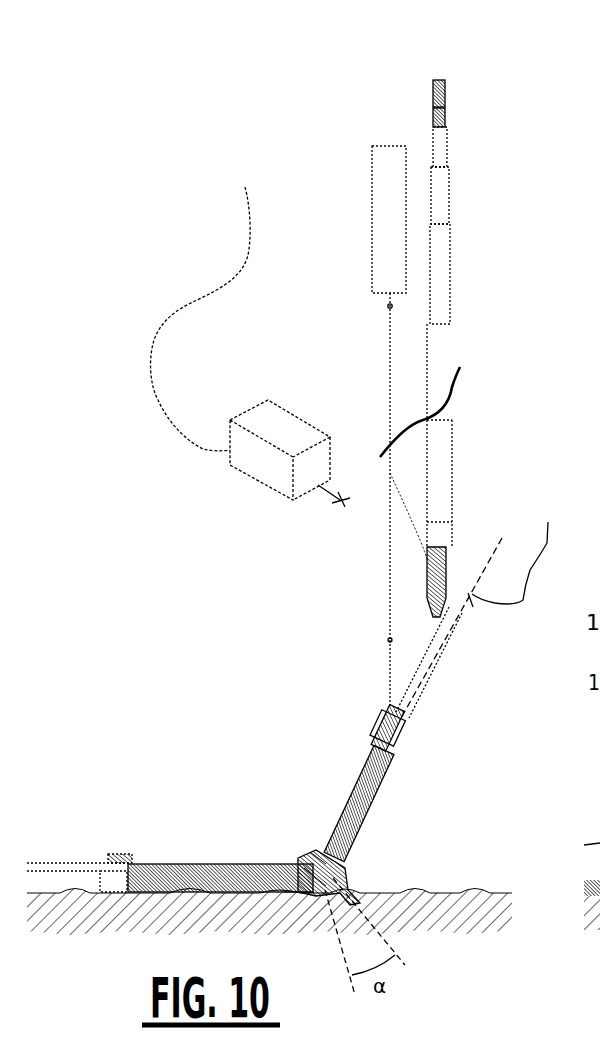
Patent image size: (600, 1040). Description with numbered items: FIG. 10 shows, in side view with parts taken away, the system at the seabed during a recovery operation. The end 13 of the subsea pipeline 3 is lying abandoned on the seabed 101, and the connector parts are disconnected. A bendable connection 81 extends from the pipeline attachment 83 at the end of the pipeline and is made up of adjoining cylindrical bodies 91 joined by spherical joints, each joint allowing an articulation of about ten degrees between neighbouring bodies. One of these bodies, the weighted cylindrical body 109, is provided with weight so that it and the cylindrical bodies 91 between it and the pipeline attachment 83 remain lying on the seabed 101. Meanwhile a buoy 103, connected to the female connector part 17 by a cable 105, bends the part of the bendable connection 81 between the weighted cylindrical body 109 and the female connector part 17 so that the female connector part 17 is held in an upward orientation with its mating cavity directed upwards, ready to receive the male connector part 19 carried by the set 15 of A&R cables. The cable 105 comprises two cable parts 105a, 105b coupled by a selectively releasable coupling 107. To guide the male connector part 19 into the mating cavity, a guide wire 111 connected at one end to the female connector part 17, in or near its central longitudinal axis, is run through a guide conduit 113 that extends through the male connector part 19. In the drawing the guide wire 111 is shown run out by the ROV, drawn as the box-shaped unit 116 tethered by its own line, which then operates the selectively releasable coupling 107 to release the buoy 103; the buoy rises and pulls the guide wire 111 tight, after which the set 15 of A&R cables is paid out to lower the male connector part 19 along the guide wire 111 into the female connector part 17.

The pipeline 3 is at (68, 867).
The end of the subsea pipeline 13 is at (106, 822).
The set of A&R cables 15 is at (442, 103).
The female connector part 17 is at (420, 752).
The male connector part 19 is at (470, 596).
The bendable connection 81 is at (220, 818).
The pipeline attachment 83 is at (112, 880).
The cylindrical bodies 91 is at (300, 860).
The seabed 101 is at (440, 912).
The buoy 103 is at (385, 187).
The cable 105 is at (237, 577).
The cable part 105a is at (390, 540).
The cable part 105b is at (390, 668).
The selectively releasable coupling 107 is at (390, 641).
The weighted cylindrical body 109 is at (283, 890).
The guide wire 111 is at (431, 398).
The guide conduit 113 is at (440, 598).
The controller 116 is at (255, 465).